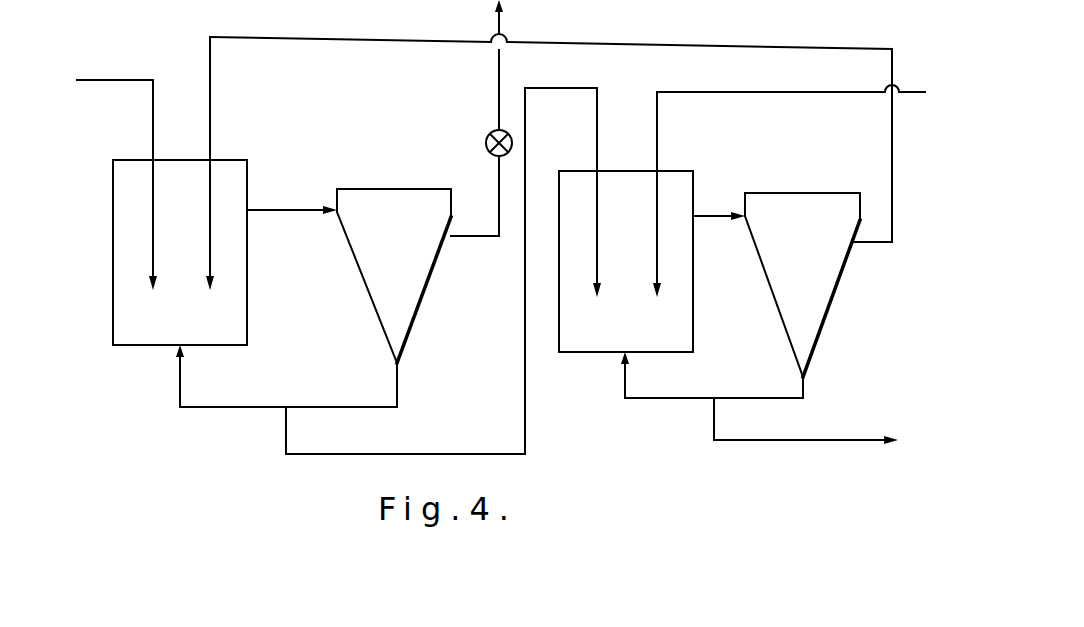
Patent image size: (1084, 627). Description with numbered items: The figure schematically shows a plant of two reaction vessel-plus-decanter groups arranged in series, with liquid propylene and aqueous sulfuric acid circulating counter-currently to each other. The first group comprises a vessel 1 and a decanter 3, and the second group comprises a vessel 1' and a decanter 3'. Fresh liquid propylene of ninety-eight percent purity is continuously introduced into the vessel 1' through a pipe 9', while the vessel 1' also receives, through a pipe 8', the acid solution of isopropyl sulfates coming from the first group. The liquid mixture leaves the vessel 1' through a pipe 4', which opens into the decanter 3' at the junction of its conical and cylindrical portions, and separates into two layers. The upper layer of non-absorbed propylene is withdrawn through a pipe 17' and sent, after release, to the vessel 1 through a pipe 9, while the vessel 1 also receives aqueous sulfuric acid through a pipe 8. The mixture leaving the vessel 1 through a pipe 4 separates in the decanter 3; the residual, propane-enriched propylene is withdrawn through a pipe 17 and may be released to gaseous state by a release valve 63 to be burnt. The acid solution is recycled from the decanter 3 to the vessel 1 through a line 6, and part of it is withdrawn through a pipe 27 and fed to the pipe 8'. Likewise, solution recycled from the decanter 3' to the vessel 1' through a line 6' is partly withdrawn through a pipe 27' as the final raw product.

The vessel 1 is at (198, 252).
The decanter 3 is at (388, 298).
The pipe 4 is at (292, 194).
The pipe 6 is at (286, 376).
The pipe 8 is at (130, 185).
The pipe 9 is at (225, 163).
The pipe 17 is at (480, 141).
The pipe 27 is at (423, 286).
The release valve 63 is at (486, 137).
The vessel 1' is at (647, 261).
The decanter 3' is at (809, 295).
The pipe 4' is at (719, 196).
The pipe 6' is at (712, 401).
The pipe 8' is at (579, 192).
The pipe 9' is at (789, 191).
The pipe 17' is at (566, 159).
The pipe 27' is at (787, 440).